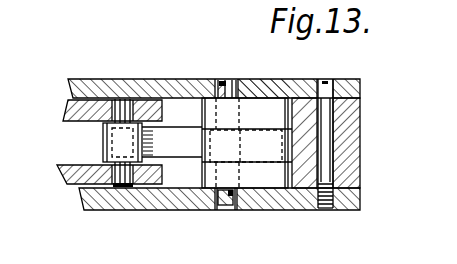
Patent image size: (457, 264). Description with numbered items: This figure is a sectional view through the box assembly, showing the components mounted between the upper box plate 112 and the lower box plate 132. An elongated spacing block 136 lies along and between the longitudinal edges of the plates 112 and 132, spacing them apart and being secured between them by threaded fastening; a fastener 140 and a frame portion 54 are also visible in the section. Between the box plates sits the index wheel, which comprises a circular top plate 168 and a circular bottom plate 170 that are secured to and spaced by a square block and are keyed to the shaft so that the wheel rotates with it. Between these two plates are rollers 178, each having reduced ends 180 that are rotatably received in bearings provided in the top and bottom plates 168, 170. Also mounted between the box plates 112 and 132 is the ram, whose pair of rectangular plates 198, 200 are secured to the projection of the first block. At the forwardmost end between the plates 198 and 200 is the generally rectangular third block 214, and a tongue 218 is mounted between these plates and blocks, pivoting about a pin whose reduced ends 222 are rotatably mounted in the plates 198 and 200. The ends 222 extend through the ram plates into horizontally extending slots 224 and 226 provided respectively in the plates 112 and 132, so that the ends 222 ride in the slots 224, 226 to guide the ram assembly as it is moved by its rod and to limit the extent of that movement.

The frame 54 is at (9, 54).
The box plate 112 is at (88, 87).
The box plate 132 is at (113, 200).
The spacing block 136 is at (356, 116).
The bolt 140 is at (331, 170).
The top plate 168 is at (65, 106).
The bottom plate 170 is at (63, 176).
The roller 178 is at (103, 143).
The reduced end 180 is at (123, 103).
The rectangular plate 198 is at (268, 110).
The rectangular plate 200 is at (273, 182).
The third block 214 is at (217, 143).
The tongue 218 is at (177, 148).
The reduced end 222 is at (225, 78).
The slot 224 is at (243, 88).
The slot 226 is at (222, 208).